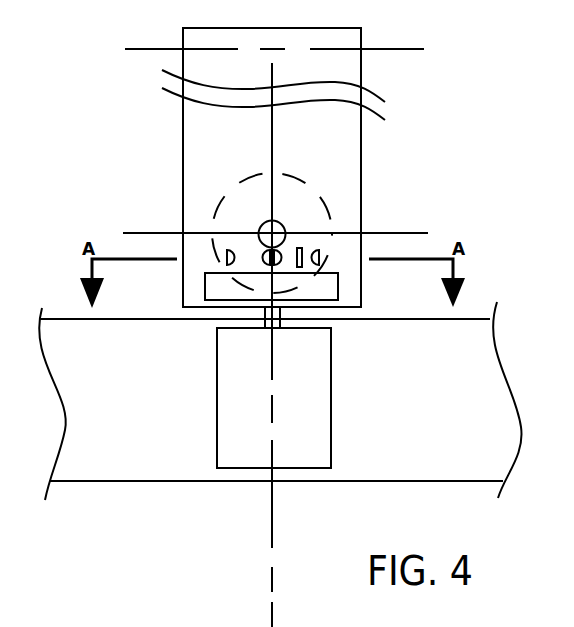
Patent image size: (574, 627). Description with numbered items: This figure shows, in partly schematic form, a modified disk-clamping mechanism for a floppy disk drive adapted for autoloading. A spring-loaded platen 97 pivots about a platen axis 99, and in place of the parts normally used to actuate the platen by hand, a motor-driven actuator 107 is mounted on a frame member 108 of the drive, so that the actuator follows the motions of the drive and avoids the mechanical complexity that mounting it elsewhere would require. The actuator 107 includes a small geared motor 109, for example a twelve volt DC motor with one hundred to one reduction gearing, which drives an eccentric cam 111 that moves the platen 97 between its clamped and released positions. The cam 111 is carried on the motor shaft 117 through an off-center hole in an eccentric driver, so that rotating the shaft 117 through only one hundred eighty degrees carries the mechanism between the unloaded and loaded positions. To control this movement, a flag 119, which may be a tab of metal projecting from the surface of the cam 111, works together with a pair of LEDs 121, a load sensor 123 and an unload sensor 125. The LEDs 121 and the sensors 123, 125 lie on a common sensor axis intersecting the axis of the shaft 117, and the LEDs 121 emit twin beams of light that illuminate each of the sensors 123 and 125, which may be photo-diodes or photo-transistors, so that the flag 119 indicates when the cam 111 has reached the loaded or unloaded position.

The spring-loaded platen 97 is at (385, 73).
The platen axis 99 is at (153, 49).
The motor-driven actuator 107 is at (157, 466).
The frame member 108 is at (425, 434).
The geared motor 109 is at (259, 466).
The eccentric cam 111 is at (193, 292).
The motor shaft 117 is at (278, 317).
The flag 119 is at (298, 248).
The pair of LEDs 121 is at (254, 249).
The load sensor 123 is at (227, 258).
The unload sensor 125 is at (321, 261).